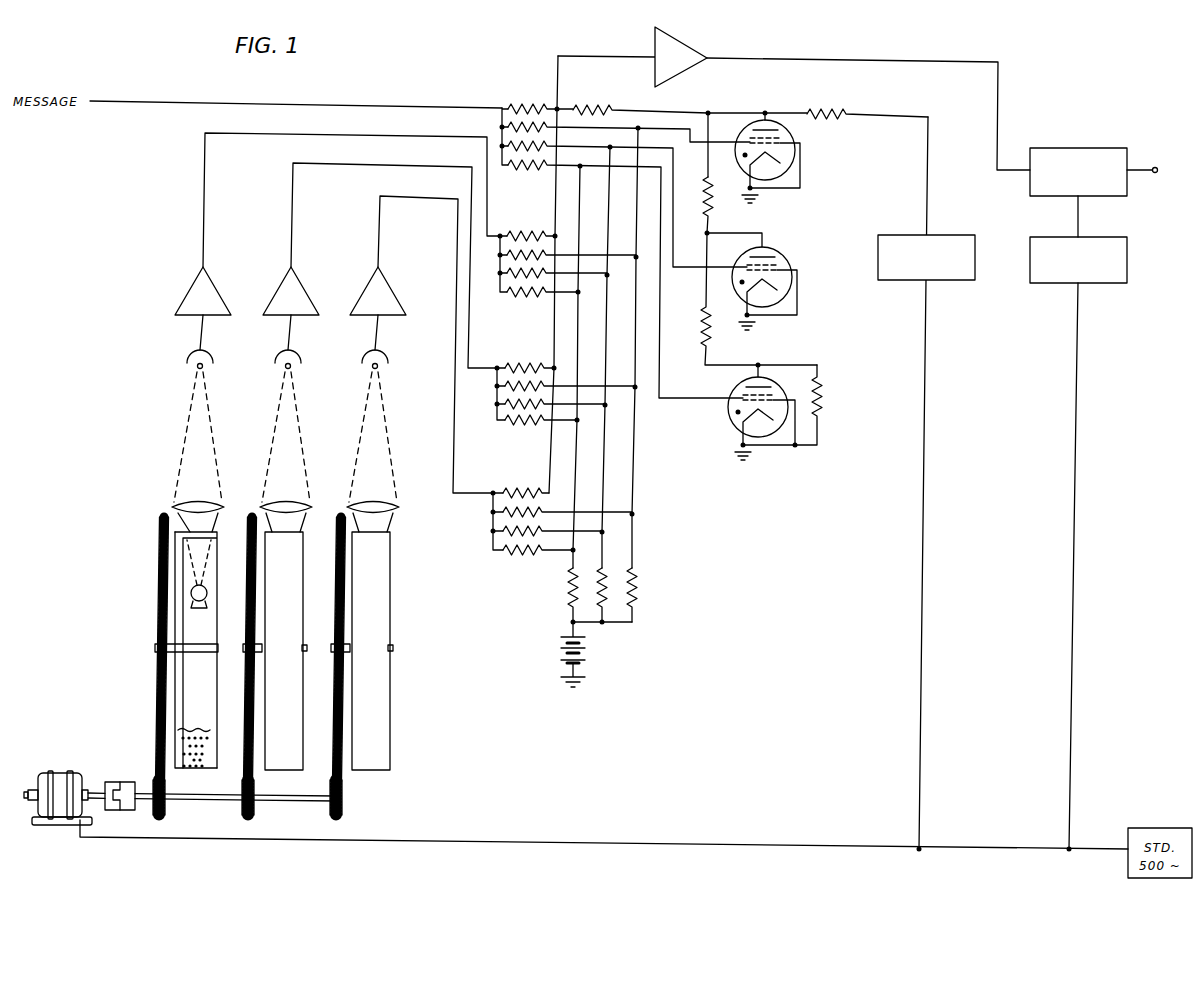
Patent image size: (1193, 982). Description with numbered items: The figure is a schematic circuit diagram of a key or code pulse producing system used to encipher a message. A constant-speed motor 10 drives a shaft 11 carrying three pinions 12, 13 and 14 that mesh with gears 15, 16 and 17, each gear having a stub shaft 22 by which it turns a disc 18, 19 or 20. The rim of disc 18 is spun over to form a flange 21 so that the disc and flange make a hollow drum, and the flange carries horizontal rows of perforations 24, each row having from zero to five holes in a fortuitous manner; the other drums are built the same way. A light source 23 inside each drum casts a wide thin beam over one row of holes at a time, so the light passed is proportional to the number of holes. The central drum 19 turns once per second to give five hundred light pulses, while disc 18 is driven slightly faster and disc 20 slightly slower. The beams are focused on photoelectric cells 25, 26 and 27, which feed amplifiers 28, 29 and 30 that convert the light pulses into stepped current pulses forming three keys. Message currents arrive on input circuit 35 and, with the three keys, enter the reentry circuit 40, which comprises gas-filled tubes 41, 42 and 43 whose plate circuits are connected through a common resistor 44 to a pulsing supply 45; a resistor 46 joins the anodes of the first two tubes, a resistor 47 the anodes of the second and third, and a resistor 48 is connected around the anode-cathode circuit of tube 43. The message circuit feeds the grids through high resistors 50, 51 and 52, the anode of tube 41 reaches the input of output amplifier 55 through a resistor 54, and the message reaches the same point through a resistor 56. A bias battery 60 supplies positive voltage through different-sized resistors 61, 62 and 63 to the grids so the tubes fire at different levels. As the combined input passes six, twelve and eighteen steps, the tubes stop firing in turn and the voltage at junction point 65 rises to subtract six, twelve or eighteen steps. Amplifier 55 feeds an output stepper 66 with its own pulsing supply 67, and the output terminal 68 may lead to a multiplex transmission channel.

The motor 10 is at (56, 773).
The shaft 11 is at (294, 802).
The pinion 12 is at (160, 815).
The pinion 13 is at (253, 816).
The pinion 14 is at (345, 816).
The gear 15 is at (160, 692).
The gear 16 is at (250, 692).
The gear 17 is at (338, 692).
The disc 18 is at (178, 623).
The disc 19 is at (270, 617).
The disc 20 is at (358, 617).
The flange 21 is at (183, 535).
The stub shaft 22 is at (190, 648).
The light source 23 is at (190, 597).
The perforations 24 is at (210, 758).
The photoelectric cell 25 is at (188, 362).
The photoelectric cell 26 is at (277, 362).
The photoelectric cell 27 is at (365, 357).
The amplifier 28 is at (185, 301).
The amplifier 29 is at (275, 301).
The amplifier 30 is at (364, 303).
The input circuit 35 is at (178, 101).
The reentry circuit 40 is at (609, 312).
The gas-filled tube 41 is at (787, 147).
The gas-filled tube 42 is at (790, 278).
The gas-filled tube 43 is at (770, 430).
The common resistor 44 is at (815, 110).
The pulsing supply 45 is at (954, 280).
The resistor 46 is at (708, 202).
The resistor 47 is at (707, 333).
The resistor 48 is at (818, 390).
The high resistor 50 is at (517, 117).
The high resistor 51 is at (517, 140).
The high resistor 52 is at (543, 169).
The resistor 54 is at (588, 91).
The output amplifier 55 is at (672, 47).
The resistor 56 is at (535, 100).
The bias battery 60 is at (584, 657).
The resistor 61 is at (633, 583).
The resistor 62 is at (612, 582).
The resistor 63 is at (569, 590).
The junction point 65 is at (710, 112).
The output stepper 66 is at (1066, 150).
The pulsing supply 67 is at (1120, 270).
The output terminal 68 is at (1157, 172).